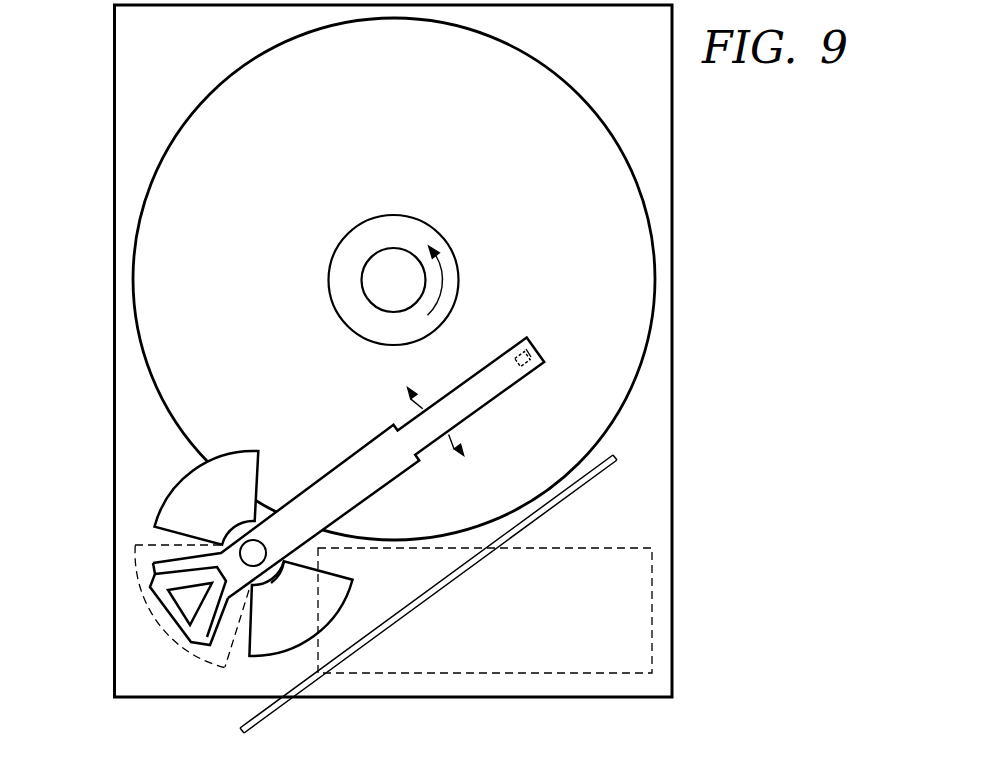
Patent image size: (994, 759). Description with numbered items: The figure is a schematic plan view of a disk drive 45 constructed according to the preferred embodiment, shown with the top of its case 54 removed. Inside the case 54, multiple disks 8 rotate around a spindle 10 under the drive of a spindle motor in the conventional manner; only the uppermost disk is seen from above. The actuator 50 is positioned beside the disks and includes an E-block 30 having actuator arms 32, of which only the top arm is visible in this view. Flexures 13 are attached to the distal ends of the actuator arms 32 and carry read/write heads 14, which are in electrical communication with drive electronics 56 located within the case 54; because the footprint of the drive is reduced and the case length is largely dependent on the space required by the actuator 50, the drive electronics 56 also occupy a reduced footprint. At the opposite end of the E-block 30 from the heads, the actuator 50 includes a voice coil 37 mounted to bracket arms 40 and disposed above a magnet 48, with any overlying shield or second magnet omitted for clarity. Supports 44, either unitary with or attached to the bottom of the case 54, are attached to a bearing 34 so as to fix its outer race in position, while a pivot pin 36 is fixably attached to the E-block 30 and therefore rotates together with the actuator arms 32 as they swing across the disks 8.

The disks 8 is at (383, 104).
The spindle 10 is at (362, 222).
The flexures 13 is at (514, 346).
The read/write heads 14 is at (530, 348).
The E-block 30 is at (346, 489).
The actuator arms 32 is at (378, 447).
The bearing 34 is at (283, 578).
The pivot pin 36 is at (266, 551).
The voice coil 37 is at (188, 641).
The bracket arms 40 is at (175, 584).
The supports 44 is at (203, 512).
The disk drive 45 is at (774, 191).
The magnet 48 is at (226, 667).
The actuator 50 is at (417, 599).
The case 54 is at (113, 53).
The drive electronics 56 is at (620, 548).